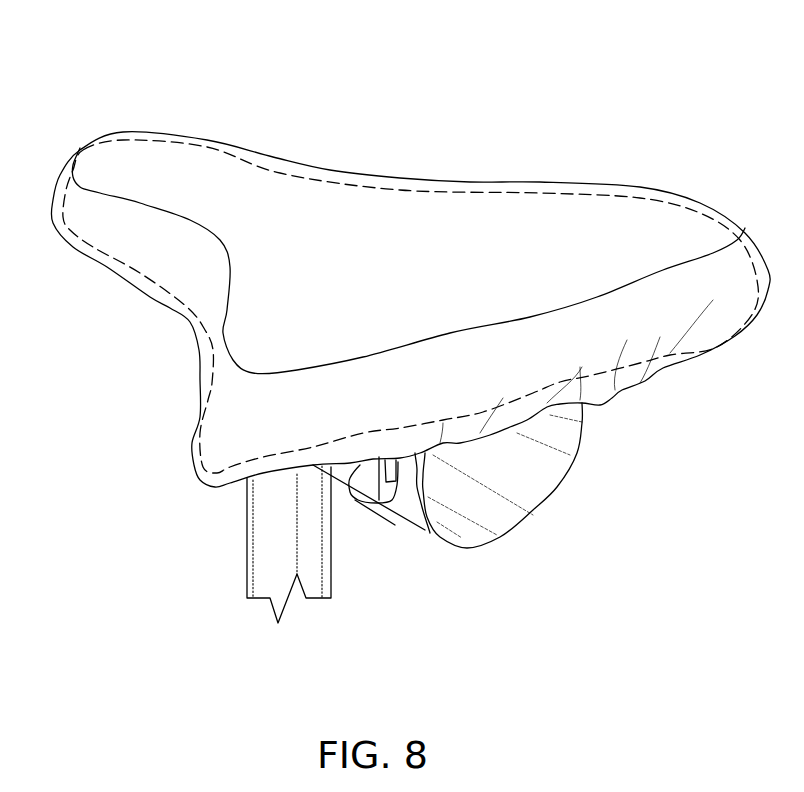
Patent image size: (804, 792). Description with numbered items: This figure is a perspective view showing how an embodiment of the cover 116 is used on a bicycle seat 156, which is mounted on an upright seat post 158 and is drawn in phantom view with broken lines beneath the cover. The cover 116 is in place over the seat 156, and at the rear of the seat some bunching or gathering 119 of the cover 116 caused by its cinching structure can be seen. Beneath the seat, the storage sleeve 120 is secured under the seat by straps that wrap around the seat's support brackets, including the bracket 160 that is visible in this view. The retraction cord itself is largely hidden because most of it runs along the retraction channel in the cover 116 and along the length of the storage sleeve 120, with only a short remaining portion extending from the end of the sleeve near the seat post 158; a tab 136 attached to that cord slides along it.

The cover 116 is at (305, 163).
The bicycle seat 156 is at (137, 268).
The bunching or gathering 119 is at (610, 403).
The storage sleeve 120 is at (571, 519).
The seat post 158 is at (258, 545).
The tab 136 is at (368, 502).
The bracket 160 is at (408, 483).